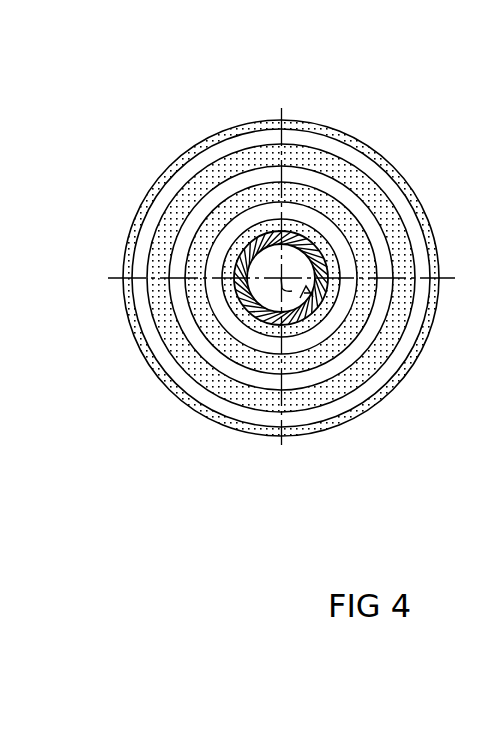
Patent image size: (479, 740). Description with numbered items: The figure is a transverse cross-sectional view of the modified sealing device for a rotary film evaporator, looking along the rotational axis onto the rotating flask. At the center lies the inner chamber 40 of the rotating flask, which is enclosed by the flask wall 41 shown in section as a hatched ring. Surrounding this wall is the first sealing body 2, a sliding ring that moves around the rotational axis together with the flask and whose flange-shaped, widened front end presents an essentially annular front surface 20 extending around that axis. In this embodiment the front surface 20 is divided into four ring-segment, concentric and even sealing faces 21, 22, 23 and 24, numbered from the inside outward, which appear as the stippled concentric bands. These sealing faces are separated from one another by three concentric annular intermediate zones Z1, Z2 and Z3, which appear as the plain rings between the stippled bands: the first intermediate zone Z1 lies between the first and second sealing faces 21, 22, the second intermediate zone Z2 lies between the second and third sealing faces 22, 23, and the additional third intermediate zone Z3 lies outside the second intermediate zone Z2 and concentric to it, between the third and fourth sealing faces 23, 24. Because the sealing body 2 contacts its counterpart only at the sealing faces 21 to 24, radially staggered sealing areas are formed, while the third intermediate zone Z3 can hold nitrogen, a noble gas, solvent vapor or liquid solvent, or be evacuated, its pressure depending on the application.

The first sealing body 2 is at (250, 130).
The front surface 20 is at (288, 131).
The first sealing face 21 is at (339, 222).
The second sealing face 22 is at (380, 214).
The third sealing face 23 is at (388, 188).
The fourth sealing face 24 is at (423, 224).
The inner chamber 40 is at (257, 243).
The wall 41 is at (318, 296).
The first intermediate zone Z1 is at (223, 318).
The second intermediate zone Z2 is at (247, 375).
The third intermediate zone Z3 is at (290, 413).